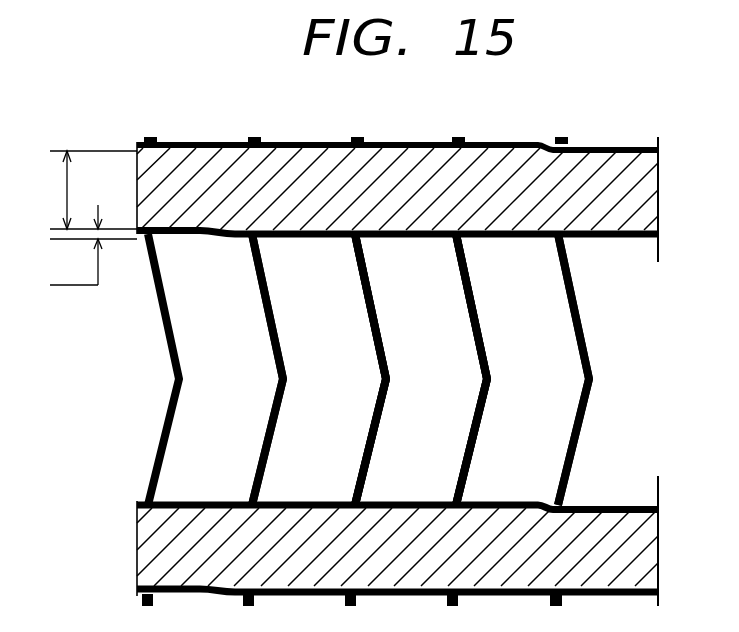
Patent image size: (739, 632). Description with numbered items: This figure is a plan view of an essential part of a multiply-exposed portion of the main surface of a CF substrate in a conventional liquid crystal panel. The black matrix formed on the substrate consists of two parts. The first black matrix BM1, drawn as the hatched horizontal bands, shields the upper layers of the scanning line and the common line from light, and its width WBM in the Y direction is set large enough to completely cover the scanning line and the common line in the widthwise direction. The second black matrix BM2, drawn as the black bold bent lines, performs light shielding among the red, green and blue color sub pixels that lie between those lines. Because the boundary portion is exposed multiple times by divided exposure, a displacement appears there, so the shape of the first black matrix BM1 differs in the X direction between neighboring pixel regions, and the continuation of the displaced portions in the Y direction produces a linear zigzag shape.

The first black matrix BM1 is at (187, 165).
The second black matrix BM2 is at (158, 434).
The width of the first black matrix WBM is at (75, 190).